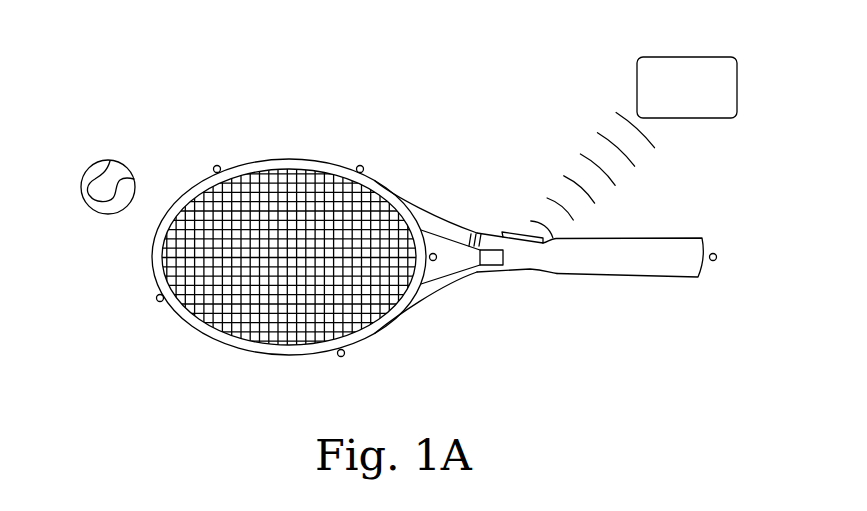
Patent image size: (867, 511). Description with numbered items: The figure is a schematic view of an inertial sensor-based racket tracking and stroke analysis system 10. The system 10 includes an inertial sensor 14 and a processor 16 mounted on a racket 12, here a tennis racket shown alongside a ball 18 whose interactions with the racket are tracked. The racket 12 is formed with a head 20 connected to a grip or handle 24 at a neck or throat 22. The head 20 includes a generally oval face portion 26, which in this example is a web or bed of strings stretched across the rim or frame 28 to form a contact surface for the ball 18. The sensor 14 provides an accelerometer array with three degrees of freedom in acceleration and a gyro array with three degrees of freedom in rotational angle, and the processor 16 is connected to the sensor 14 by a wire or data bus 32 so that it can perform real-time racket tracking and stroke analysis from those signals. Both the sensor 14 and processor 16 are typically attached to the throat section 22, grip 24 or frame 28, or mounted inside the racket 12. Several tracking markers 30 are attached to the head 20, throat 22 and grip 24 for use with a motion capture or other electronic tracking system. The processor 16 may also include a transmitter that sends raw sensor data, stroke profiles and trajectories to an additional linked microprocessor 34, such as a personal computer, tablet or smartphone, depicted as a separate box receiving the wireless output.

The racket tracking and stroke analysis system 10 is at (133, 66).
The racket 12 is at (407, 172).
The inertial sensor 14 is at (492, 258).
The processor 16 is at (513, 231).
The ball 18 is at (89, 172).
The head 20 is at (242, 271).
The throat 22 is at (448, 289).
The grip 24 is at (651, 251).
The face portion 26 is at (266, 252).
The frame 28 is at (208, 336).
The tracking markers 30 is at (217, 165).
The data bus 32 is at (481, 231).
The linked microprocessor 34 is at (637, 78).